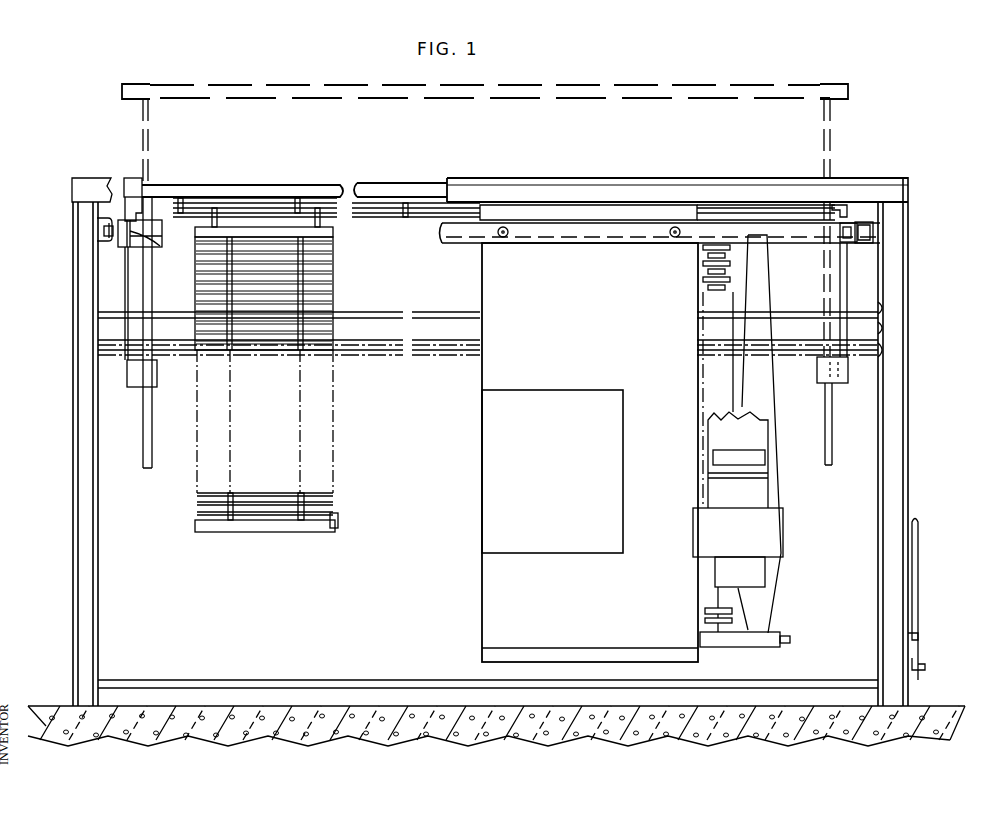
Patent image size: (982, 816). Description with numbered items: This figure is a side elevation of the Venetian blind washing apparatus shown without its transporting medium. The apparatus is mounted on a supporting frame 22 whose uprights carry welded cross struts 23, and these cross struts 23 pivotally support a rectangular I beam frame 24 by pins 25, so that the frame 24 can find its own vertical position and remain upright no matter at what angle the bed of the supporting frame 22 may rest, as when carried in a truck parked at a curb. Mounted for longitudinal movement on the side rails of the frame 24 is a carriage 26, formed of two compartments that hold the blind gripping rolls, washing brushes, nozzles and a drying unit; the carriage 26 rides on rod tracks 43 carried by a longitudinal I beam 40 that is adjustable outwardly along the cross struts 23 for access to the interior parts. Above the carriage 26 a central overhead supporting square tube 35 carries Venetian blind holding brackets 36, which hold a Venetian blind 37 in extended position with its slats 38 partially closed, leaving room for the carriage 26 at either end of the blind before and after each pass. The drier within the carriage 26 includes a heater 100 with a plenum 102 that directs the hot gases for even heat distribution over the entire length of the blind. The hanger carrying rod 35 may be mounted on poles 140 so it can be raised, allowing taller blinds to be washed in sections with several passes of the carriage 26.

The supporting frame 22 is at (73, 473).
The cross struts 23 is at (105, 231).
The rectangular I beam frame 24 is at (149, 303).
The pins 25 is at (104, 236).
The carriage 26 is at (598, 292).
The central overhead supporting square tube 35 is at (572, 92).
The Venetian blind holding brackets 36 is at (325, 223).
The Venetian blind 37 is at (213, 503).
The slats 38 is at (337, 502).
The longitudinal I beam 40 is at (546, 234).
The rod tracks 43 is at (608, 241).
The heater 100 is at (758, 485).
The plenum 102 is at (758, 274).
The poles 140 is at (148, 165).